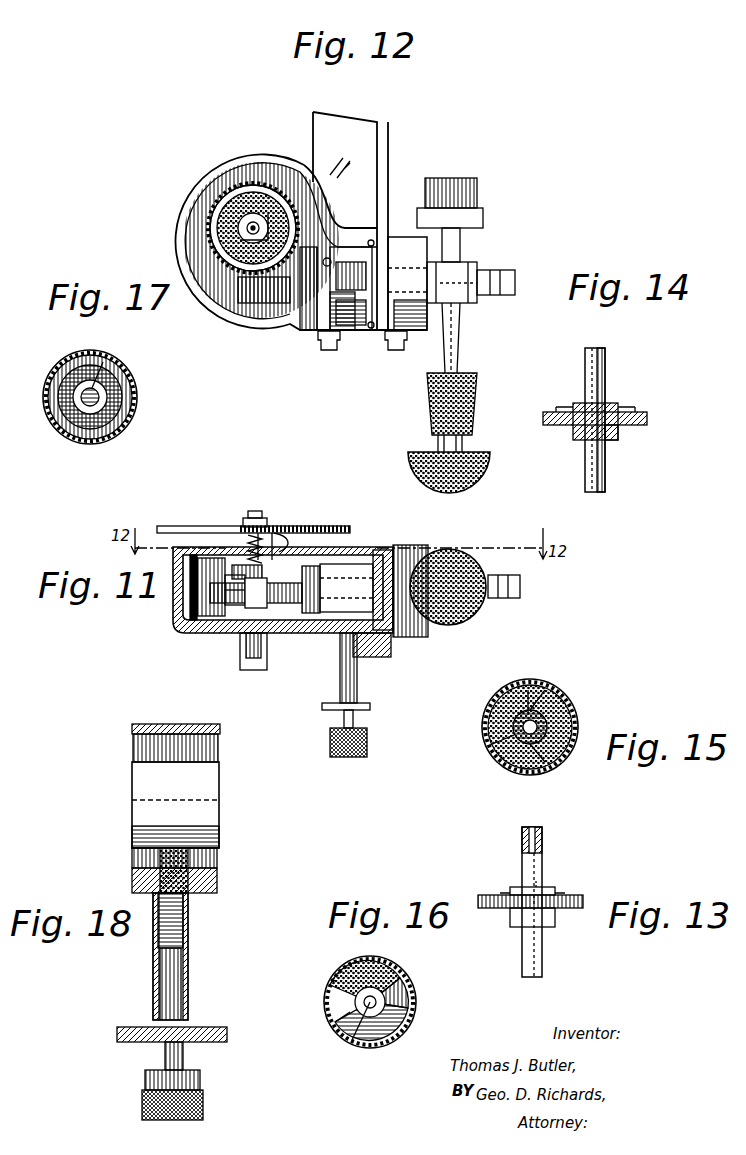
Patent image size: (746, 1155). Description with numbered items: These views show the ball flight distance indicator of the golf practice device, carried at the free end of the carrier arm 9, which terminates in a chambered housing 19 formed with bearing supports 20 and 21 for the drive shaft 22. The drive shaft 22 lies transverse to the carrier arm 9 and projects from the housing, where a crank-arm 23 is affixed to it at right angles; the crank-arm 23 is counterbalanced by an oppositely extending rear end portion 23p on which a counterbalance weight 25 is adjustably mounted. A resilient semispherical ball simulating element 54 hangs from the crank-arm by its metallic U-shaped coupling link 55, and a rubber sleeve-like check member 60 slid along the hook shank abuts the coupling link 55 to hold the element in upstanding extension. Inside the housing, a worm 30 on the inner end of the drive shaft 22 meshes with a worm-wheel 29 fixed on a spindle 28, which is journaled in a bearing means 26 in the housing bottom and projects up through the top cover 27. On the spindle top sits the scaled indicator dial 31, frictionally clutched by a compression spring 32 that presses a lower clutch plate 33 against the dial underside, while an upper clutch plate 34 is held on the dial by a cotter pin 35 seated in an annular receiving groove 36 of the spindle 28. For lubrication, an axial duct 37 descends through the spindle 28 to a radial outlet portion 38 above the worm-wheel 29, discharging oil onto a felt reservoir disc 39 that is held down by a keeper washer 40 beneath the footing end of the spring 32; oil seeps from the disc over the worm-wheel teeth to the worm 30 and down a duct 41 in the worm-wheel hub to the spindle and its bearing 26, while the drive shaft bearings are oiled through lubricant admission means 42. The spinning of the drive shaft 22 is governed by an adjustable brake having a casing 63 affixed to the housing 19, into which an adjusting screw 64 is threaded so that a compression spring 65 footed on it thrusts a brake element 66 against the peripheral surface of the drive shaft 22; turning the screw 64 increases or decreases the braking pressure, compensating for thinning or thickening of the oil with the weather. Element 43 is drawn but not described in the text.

In FIG. 12, the carrier arm 9 is at (389, 140).
In FIG. 12, the chambered housing 19 is at (186, 202).
In FIG. 11, the chambered housing 19 is at (173, 567).
In FIG. 12, the bearing support 20 is at (312, 320).
In FIG. 11, the bearing support 20 is at (330, 625).
In FIG. 12, the bearing support 21 is at (408, 238).
In FIG. 11, the bearing support 21 is at (414, 637).
In FIG. 12, the drive shaft 22 is at (472, 294).
In FIG. 11, the drive shaft 22 is at (361, 555).
In FIG. 18, the drive shaft 22 is at (205, 783).
In FIG. 12, the crank-arm 23 is at (459, 338).
In FIG. 12, the rear end portion of the crank-arm 23p is at (462, 250).
In FIG. 12, the counterbalance weight 25 is at (484, 221).
In FIG. 11, the bearing means 26 is at (240, 645).
In FIG. 11, the top cover 27 is at (208, 555).
In FIG. 12, the spindle 28 is at (215, 257).
In FIG. 14, the spindle 28 is at (600, 380).
In FIG. 11, the spindle 28 is at (262, 572).
In FIG. 15, the spindle 28 is at (483, 743).
In FIG. 16, the spindle 28 is at (328, 1025).
In FIG. 12, the worm-wheel 29 is at (222, 172).
In FIG. 17, the worm-wheel 29 is at (133, 378).
In FIG. 14, the worm-wheel 29 is at (647, 418).
In FIG. 11, the worm-wheel 29 is at (190, 595).
In FIG. 15, the worm-wheel 29 is at (562, 690).
In FIG. 16, the worm-wheel 29 is at (336, 972).
In FIG. 13, the worm-wheel 29 is at (500, 908).
In FIG. 12, the worm 30 is at (262, 308).
In FIG. 11, the worm 30 is at (190, 625).
In FIG. 11, the indicator dial 31 is at (220, 555).
In FIG. 11, the compression spring 32 is at (246, 558).
In FIG. 11, the lower clutch plate 33 is at (291, 527).
In FIG. 11, the upper clutch plate 34 is at (282, 533).
In FIG. 11, the cotter pin 35 is at (253, 511).
In FIG. 14, the annular receiving groove 36 is at (585, 352).
In FIG. 12, the axial duct 37 is at (268, 185).
In FIG. 13, the axial duct 37 is at (542, 848).
In FIG. 15, the radial outlet portion 38 is at (560, 715).
In FIG. 16, the radial outlet portion 38 is at (385, 1000).
In FIG. 13, the radial outlet portion 38 is at (545, 885).
In FIG. 12, the reservoir disc 39 is at (248, 180).
In FIG. 14, the reservoir disc 39 is at (622, 405).
In FIG. 11, the reservoir disc 39 is at (205, 558).
In FIG. 15, the reservoir disc 39 is at (565, 757).
In FIG. 16, the reservoir disc 39 is at (390, 968).
In FIG. 13, the reservoir disc 39 is at (500, 893).
In FIG. 12, the keeper washer 40 is at (232, 288).
In FIG. 14, the keeper washer 40 is at (577, 408).
In FIG. 15, the keeper washer 40 is at (530, 684).
In FIG. 13, the keeper washer 40 is at (512, 887).
In FIG. 17, the duct 41 is at (103, 362).
In FIG. 14, the duct 41 is at (618, 434).
In FIG. 16, the duct 41 is at (350, 1045).
In FIG. 12, the lubricant admission means 42 is at (328, 352).
In FIG. 12, the foot screw 43 is at (396, 352).
In FIG. 12, the ball simulating element 54 is at (485, 466).
In FIG. 11, the ball simulating element 54 is at (477, 565).
In FIG. 12, the coupling link 55 is at (466, 443).
In FIG. 12, the check member 60 is at (477, 395).
In FIG. 11, the brake casing 63 is at (358, 680).
In FIG. 18, the brake casing 63 is at (190, 961).
In FIG. 11, the adjusting screw 64 is at (354, 718).
In FIG. 18, the adjusting screw 64 is at (185, 1056).
In FIG. 18, the compression spring 65 is at (188, 923).
In FIG. 11, the brake element 66 is at (365, 650).
In FIG. 18, the brake element 66 is at (190, 858).